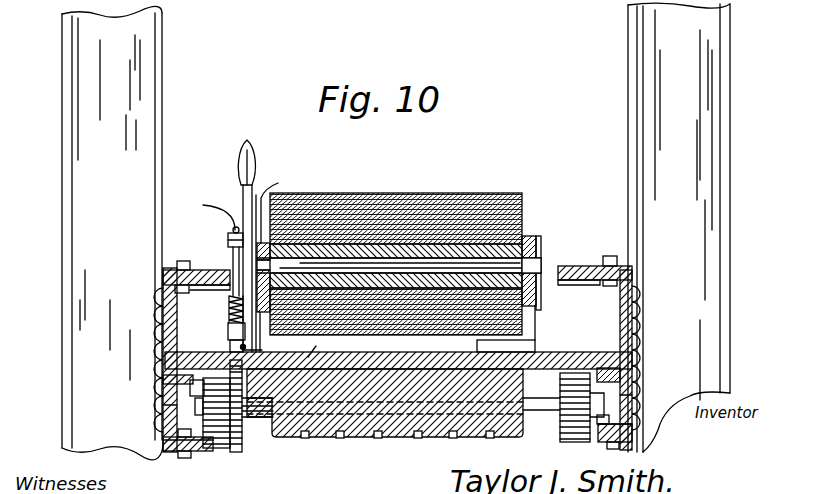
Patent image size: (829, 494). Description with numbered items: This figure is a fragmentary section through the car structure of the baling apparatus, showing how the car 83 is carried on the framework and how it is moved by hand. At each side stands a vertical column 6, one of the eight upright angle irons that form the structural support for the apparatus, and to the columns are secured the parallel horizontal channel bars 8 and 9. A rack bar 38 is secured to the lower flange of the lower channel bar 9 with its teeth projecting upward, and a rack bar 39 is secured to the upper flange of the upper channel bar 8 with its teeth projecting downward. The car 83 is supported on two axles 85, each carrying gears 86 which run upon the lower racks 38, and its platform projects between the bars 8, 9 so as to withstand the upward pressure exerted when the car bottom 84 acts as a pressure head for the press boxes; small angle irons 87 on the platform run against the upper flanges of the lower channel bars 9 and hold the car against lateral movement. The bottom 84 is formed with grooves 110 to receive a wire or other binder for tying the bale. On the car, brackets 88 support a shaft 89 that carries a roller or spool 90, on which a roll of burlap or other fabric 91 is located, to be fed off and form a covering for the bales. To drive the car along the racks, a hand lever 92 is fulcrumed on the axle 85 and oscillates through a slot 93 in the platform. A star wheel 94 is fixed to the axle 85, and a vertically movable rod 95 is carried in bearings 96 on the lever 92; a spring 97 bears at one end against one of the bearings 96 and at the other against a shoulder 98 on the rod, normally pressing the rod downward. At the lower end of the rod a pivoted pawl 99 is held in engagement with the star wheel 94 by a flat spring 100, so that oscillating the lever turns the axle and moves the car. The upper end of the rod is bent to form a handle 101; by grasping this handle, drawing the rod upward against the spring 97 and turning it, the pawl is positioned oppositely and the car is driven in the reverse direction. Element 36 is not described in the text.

The vertical column 6 is at (88, 229).
The channel bar 8 is at (165, 313).
The channel bar 9 is at (165, 413).
The lower flange 36 is at (205, 442).
The rack bar 38 is at (553, 440).
The rack bar 39 is at (178, 270).
The car 83 is at (540, 357).
The car bottom 84 is at (428, 432).
The axle 85 is at (545, 428).
The gear 86 is at (218, 448).
The angle iron 87 is at (193, 385).
The bracket 88 is at (529, 237).
The shaft 89 is at (438, 262).
The roller or spool 90 is at (384, 243).
The roll of burlap or other fabric 91 is at (338, 203).
The hand lever 92 is at (250, 146).
The slot 93 is at (325, 351).
The star wheel 94 is at (242, 452).
The rod 95 is at (233, 260).
The bearing 96 is at (232, 237).
The spring 97 is at (232, 312).
The shoulder 98 is at (232, 330).
The pawl 99 is at (240, 347).
The flat spring 100 is at (271, 349).
The handle 101 is at (211, 209).
The groove 110 is at (380, 463).